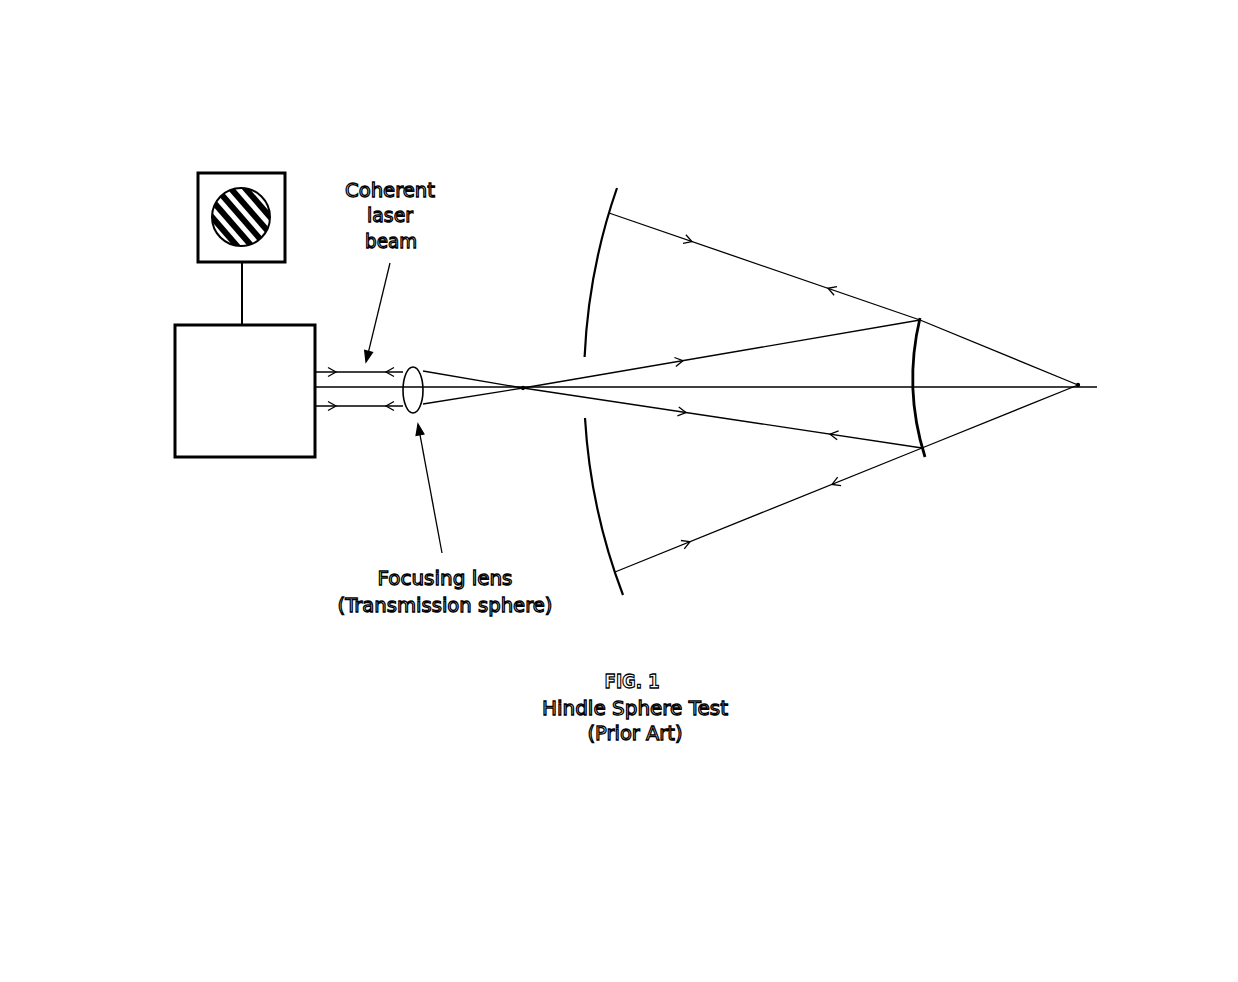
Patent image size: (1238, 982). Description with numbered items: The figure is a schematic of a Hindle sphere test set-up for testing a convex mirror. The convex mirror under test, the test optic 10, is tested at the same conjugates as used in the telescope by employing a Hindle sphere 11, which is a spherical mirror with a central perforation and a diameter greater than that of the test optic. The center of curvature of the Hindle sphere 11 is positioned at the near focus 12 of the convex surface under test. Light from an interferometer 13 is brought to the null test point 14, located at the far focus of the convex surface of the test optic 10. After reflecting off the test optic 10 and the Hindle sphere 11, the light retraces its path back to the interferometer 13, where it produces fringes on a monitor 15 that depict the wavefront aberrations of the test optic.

The test optic 10 is at (917, 306).
The Hindle sphere 11 is at (615, 178).
The near focus 12 is at (1075, 407).
The interferometer 13 is at (238, 475).
The null test point 14 is at (525, 372).
The monitor 15 is at (248, 161).